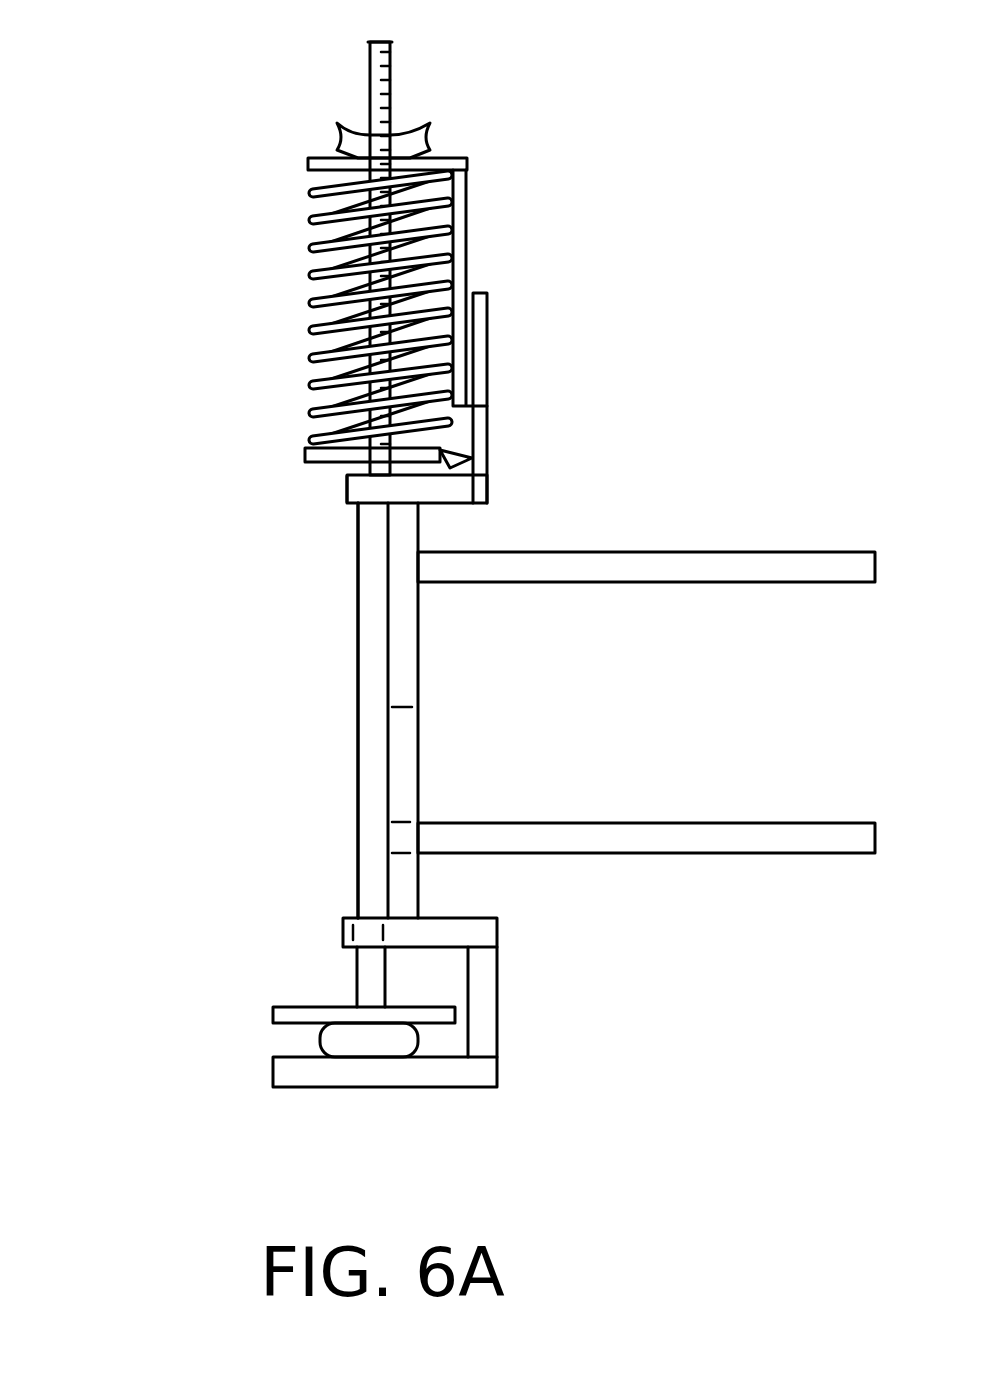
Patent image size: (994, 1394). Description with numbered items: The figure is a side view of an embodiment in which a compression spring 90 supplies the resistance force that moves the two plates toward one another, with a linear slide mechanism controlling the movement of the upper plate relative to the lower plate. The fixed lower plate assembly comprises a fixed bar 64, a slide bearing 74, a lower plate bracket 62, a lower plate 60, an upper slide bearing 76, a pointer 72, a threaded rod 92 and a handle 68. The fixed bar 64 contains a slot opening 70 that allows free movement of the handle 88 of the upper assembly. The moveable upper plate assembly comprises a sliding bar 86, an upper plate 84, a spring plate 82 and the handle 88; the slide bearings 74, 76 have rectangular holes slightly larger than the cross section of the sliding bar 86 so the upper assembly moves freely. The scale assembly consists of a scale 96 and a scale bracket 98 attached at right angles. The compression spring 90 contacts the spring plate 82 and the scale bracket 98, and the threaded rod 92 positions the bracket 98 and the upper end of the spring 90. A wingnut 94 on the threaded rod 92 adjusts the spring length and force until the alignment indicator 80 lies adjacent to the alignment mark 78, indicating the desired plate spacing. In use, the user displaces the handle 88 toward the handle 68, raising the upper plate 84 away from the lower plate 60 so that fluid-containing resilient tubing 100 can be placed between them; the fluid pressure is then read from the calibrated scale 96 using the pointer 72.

The lower plate 60 is at (363, 1090).
The lower plate bracket 62 is at (497, 997).
The fixed bar 64 is at (418, 658).
The handle 68 is at (730, 583).
The slot opening 70 is at (418, 763).
The pointer 72 is at (489, 293).
The slide bearing 74 is at (340, 930).
The upper slide bearing 76 is at (345, 488).
The alignment mark 78 is at (463, 453).
The alignment indicator 80 is at (488, 477).
The spring plate 82 is at (305, 453).
The upper plate 84 is at (290, 1007).
The sliding bar 86 is at (357, 677).
The handle 88 is at (560, 822).
The compression spring 90 is at (315, 228).
The threaded rod 92 is at (392, 82).
The wingnut 94 is at (432, 127).
The scale 96 is at (468, 220).
The scale bracket 98 is at (322, 158).
The resilient tubing 100 is at (325, 1032).